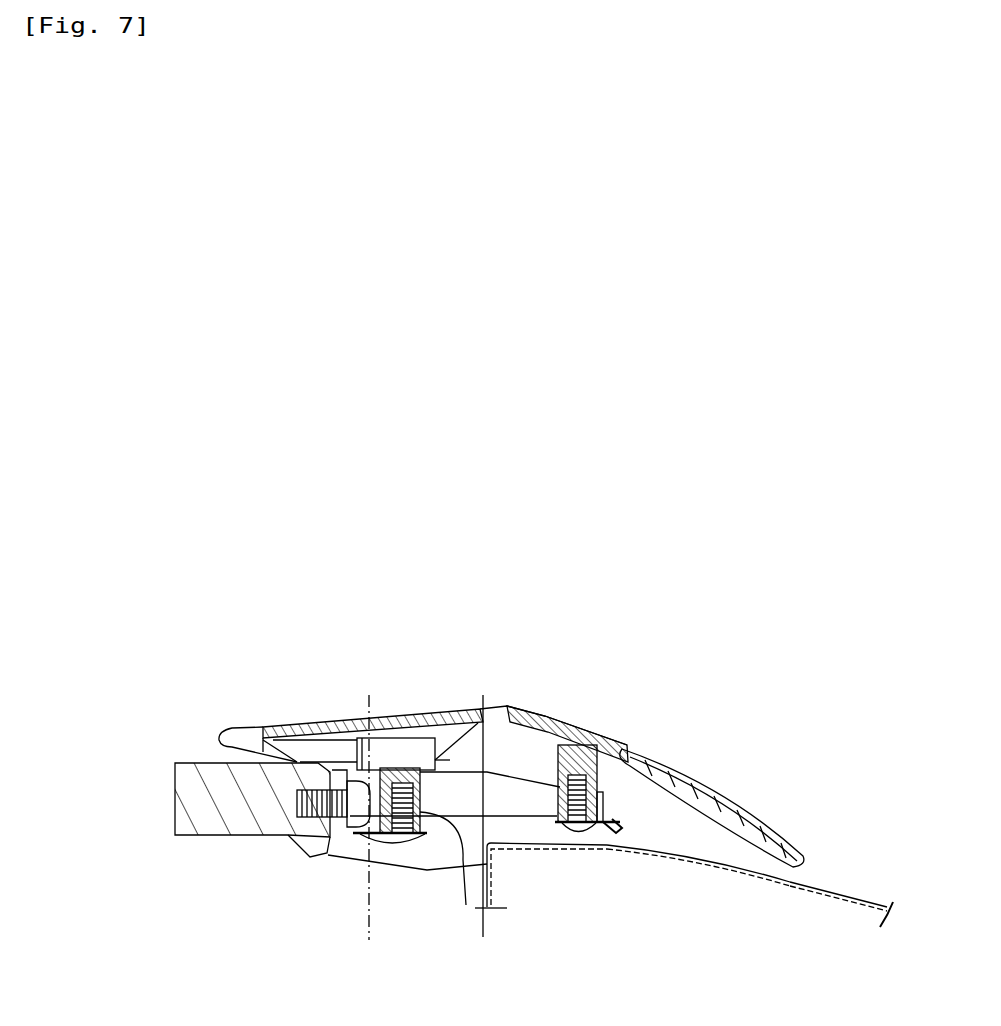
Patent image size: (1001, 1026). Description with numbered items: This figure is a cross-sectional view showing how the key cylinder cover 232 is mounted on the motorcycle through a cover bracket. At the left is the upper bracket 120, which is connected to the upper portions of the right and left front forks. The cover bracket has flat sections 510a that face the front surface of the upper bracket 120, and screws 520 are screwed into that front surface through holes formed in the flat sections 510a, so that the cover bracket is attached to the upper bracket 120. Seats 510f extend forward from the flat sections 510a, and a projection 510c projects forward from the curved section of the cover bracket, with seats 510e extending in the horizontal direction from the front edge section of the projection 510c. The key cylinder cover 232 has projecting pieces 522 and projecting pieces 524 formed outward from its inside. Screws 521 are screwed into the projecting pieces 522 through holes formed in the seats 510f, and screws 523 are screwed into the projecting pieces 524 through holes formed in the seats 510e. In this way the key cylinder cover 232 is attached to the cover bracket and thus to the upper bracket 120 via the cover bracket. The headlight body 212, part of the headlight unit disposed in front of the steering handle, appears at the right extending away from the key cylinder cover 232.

The upper bracket 120 is at (229, 838).
The headlight body 212 is at (847, 893).
The key cylinder cover 232 is at (757, 817).
The flat section 510a is at (327, 853).
The projection 510c is at (515, 803).
The seat 510e is at (605, 822).
The seat 510f is at (428, 828).
The screw 520 is at (352, 833).
The screw 521 is at (397, 838).
The projecting piece 522 is at (466, 905).
The screw 523 is at (575, 833).
The projecting piece 524 is at (625, 829).